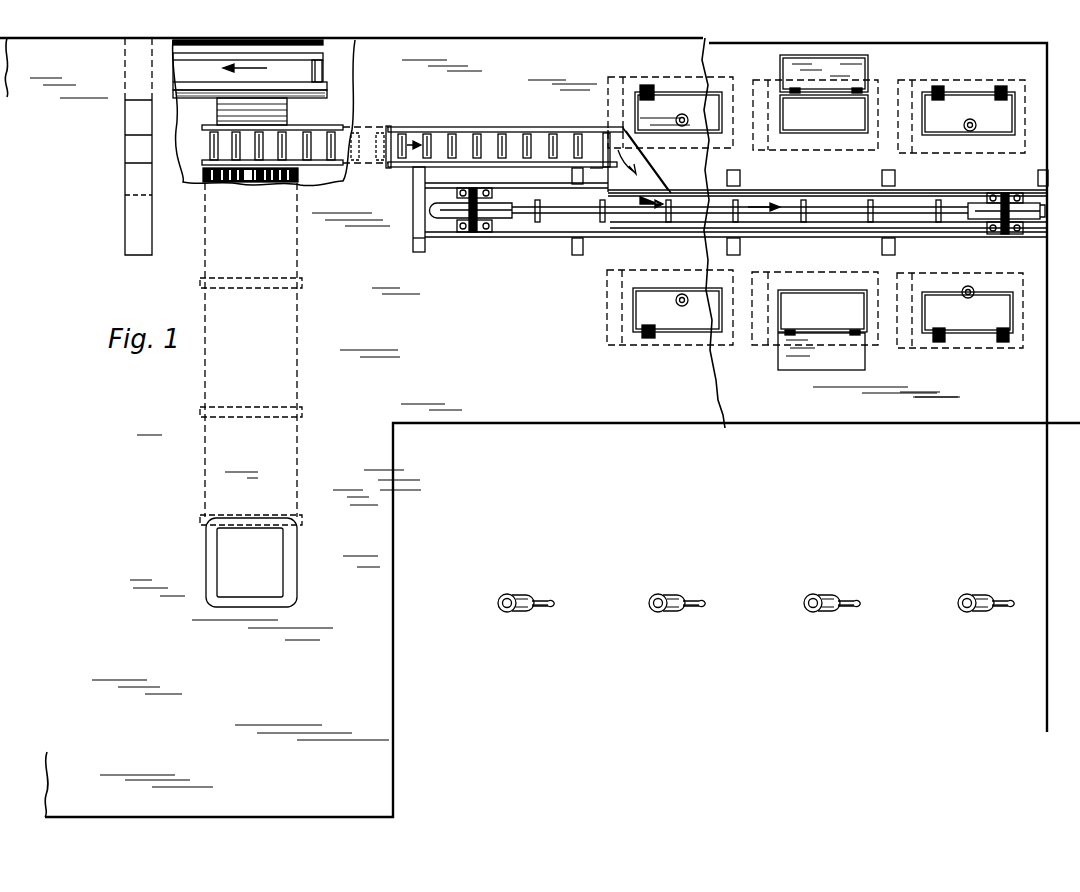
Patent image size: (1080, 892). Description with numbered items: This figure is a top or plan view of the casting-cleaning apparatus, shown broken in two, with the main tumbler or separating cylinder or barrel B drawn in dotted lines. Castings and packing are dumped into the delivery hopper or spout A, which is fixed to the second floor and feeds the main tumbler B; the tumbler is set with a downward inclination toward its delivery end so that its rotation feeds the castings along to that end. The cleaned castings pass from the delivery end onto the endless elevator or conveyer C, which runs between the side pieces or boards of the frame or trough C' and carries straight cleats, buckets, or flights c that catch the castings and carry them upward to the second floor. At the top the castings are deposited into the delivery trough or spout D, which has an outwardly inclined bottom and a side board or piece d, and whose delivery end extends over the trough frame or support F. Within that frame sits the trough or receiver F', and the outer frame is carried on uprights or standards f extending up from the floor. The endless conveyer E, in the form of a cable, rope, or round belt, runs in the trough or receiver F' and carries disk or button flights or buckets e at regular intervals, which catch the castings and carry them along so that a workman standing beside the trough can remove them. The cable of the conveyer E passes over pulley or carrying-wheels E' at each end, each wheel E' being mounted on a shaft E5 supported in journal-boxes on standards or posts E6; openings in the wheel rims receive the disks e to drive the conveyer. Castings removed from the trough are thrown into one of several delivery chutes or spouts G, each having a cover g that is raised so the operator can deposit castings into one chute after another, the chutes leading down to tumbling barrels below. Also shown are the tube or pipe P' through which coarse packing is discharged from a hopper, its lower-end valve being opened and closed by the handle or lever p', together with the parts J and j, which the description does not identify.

The delivery trough J is at (250, 82).
The trough end plates j is at (326, 50).
The endless elevator or conveyer C is at (412, 141).
The frame or trough C' is at (490, 149).
The cleats, buckets, or flights c is at (546, 131).
The delivery trough or spout D is at (632, 160).
The side board or piece d is at (637, 150).
The endless conveyer E is at (740, 213).
The disk or button flights or buckets e is at (537, 200).
The shaft E5 is at (470, 222).
The standards or posts E6 is at (477, 226).
The pulley or carrying-wheels E' is at (738, 237).
The trough frame or support F is at (736, 202).
The trough or receiver F' is at (827, 180).
The uprights or standards f is at (583, 247).
The delivery chute or spout G is at (816, 212).
The cover g is at (824, 212).
The main tumbler or separating cylinder or barrel B is at (298, 356).
The delivery hopper or spout A is at (289, 553).
The tube or pipe P' is at (746, 594).
The handle or lever p' is at (773, 594).